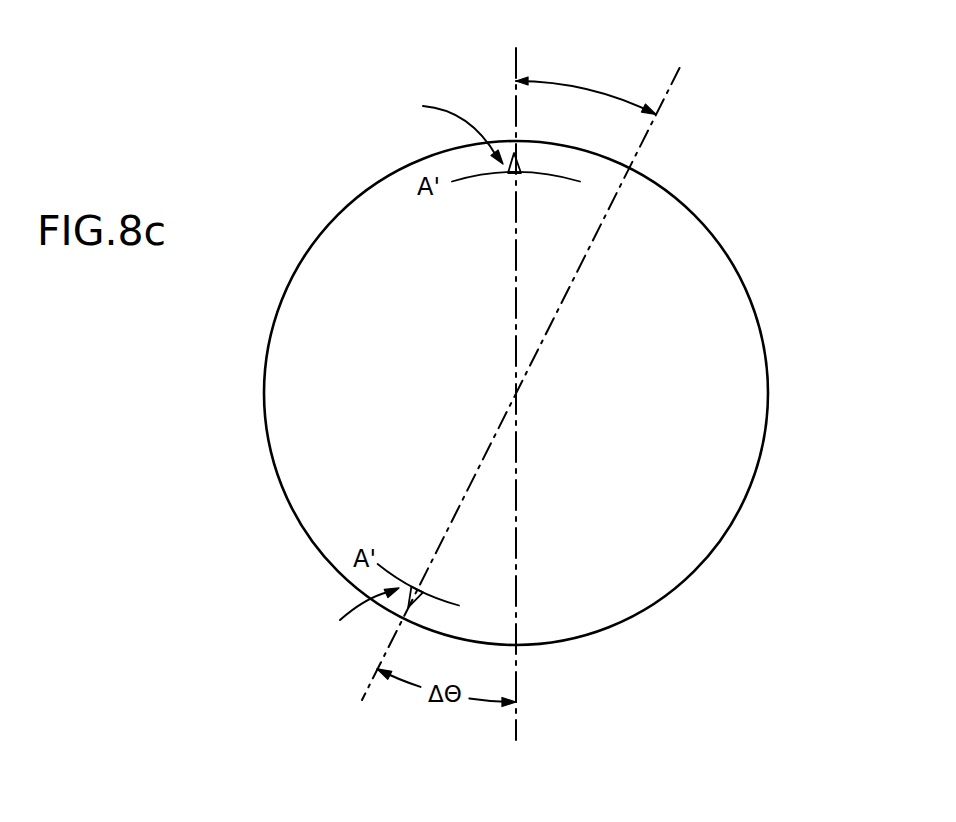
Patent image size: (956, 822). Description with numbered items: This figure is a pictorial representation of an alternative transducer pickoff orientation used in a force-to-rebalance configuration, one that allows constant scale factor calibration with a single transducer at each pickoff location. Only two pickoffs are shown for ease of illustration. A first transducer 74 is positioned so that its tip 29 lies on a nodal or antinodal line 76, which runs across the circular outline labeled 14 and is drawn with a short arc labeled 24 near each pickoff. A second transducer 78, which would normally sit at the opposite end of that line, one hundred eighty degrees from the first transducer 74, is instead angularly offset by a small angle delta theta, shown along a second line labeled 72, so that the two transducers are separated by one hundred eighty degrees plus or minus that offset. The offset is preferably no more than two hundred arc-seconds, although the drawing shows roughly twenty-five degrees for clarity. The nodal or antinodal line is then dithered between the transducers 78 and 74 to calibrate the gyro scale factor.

The wafer 14 is at (725, 250).
The notch / flat region A' 24 is at (474, 183).
The tip 29 is at (514, 164).
The rotated reference axis 72 is at (676, 80).
The first transducer 74 is at (438, 125).
The nodal or antinodal line 76 is at (516, 62).
The second transducer 78 is at (350, 621).